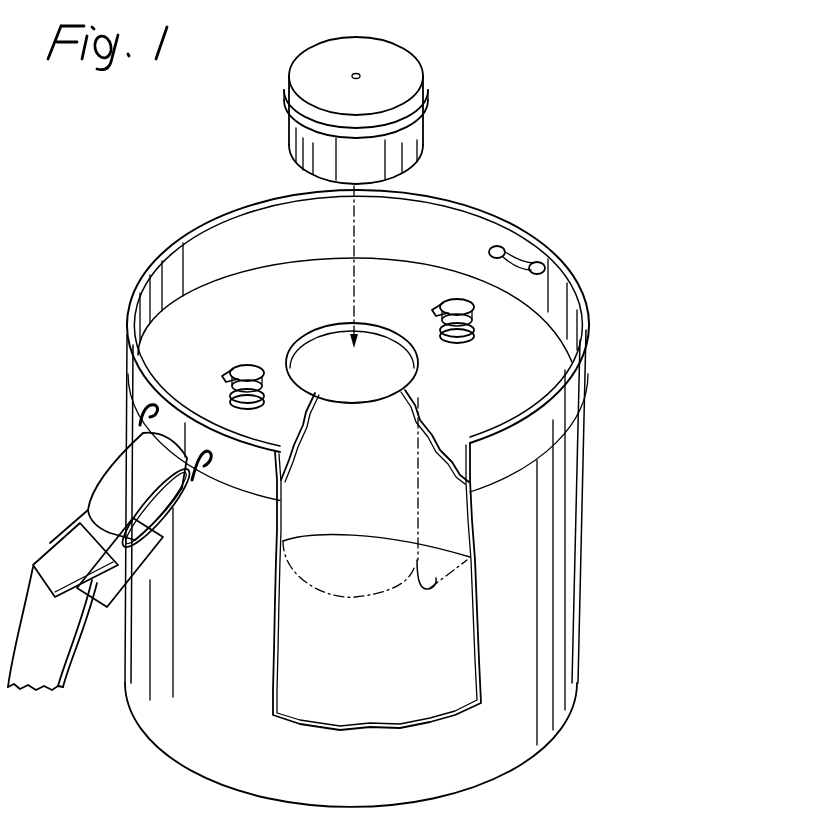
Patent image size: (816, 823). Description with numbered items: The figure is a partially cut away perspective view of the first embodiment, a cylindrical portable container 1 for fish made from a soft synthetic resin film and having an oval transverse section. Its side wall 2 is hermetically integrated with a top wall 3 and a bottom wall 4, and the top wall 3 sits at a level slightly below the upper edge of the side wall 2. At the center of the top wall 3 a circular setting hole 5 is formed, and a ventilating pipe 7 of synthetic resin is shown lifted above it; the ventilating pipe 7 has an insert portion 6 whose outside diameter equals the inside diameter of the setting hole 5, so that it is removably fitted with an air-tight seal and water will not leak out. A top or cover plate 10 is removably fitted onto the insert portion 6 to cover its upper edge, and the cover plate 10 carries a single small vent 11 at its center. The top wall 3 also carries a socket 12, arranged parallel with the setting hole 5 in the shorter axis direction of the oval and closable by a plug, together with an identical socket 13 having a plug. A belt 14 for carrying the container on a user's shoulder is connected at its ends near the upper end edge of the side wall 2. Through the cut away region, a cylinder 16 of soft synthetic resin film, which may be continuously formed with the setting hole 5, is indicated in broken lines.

The portable container 1 is at (388, 492).
The side wall 2 is at (558, 665).
The top wall 3 is at (386, 323).
The bottom wall 4 is at (303, 803).
The setting hole 5 is at (325, 343).
The insert portion 6 is at (422, 126).
The ventilating pipe 7 is at (392, 92).
The cover plate 10 is at (398, 55).
The vent 11 is at (357, 73).
The socket 12 is at (483, 318).
The socket 13 is at (243, 363).
The belt 14 is at (122, 478).
The cylinder 16 is at (468, 558).